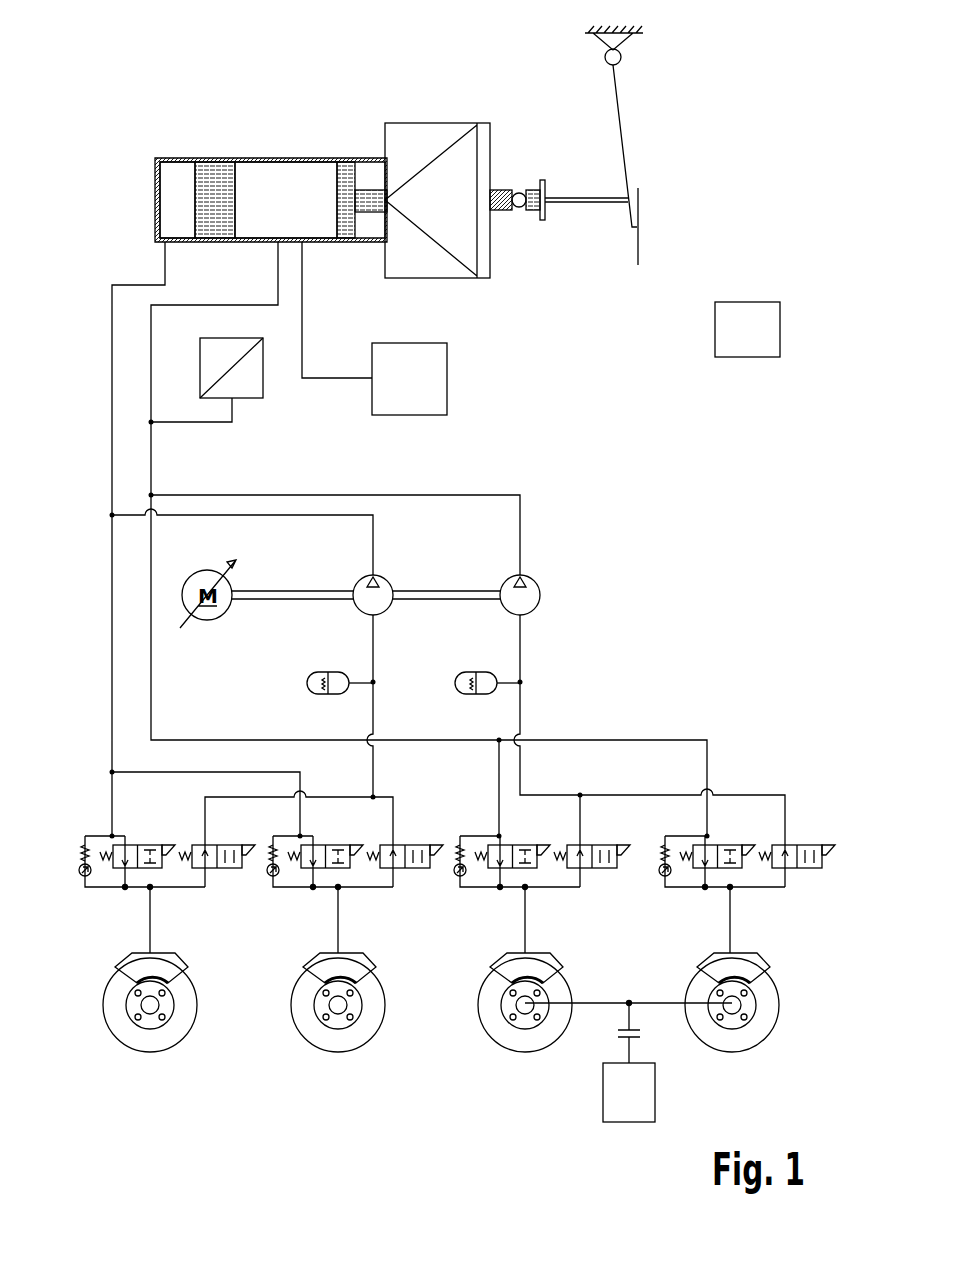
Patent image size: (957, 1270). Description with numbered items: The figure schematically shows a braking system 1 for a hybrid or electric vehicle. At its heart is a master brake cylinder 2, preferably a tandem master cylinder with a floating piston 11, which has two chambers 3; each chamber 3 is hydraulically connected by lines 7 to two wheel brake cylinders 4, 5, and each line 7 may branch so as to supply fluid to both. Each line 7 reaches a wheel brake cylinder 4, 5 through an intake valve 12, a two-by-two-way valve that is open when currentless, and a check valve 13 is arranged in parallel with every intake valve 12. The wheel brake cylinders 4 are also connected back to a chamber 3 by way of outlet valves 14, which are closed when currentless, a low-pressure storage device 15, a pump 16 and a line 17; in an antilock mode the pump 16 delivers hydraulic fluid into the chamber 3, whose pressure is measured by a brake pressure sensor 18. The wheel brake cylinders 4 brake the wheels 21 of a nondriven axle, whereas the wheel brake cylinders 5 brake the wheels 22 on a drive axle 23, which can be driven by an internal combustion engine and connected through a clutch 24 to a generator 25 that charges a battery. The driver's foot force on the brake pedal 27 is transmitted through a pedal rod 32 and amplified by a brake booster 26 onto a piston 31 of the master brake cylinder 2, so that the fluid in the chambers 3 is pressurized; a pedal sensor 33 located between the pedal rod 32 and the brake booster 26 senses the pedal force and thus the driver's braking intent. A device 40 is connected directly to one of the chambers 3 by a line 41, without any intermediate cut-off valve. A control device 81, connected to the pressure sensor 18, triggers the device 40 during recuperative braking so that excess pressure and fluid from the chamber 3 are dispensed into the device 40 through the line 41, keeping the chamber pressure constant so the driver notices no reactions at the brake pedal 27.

The braking system 1 is at (149, 76).
The master brake cylinder 2 is at (324, 248).
The chamber 3 is at (176, 200).
The wheel brake cylinder 4 is at (126, 958).
The wheel brake cylinder 5 is at (502, 960).
The line 7 is at (112, 708).
The floating piston 11 is at (213, 228).
The intake valve 12 is at (135, 845).
The check valve 13 is at (80, 876).
The outlet valve 14 is at (214, 845).
The low-pressure storage device 15 is at (326, 672).
The pump 16 is at (366, 578).
The line 17 is at (373, 708).
The brake pressure sensor 18 is at (240, 400).
The wheel 21 is at (122, 1025).
The wheel 22 is at (497, 1025).
The drive axle 23 is at (653, 1002).
The clutch 24 is at (642, 1038).
The generator 25 is at (603, 1094).
The brake booster 26 is at (449, 119).
The brake pedal 27 is at (640, 248).
The piston 31 is at (372, 192).
The pedal rod 32 is at (602, 206).
The pedal sensor 33 is at (525, 212).
The device 40 is at (447, 378).
The line 41 is at (302, 328).
The control device 81 is at (715, 328).